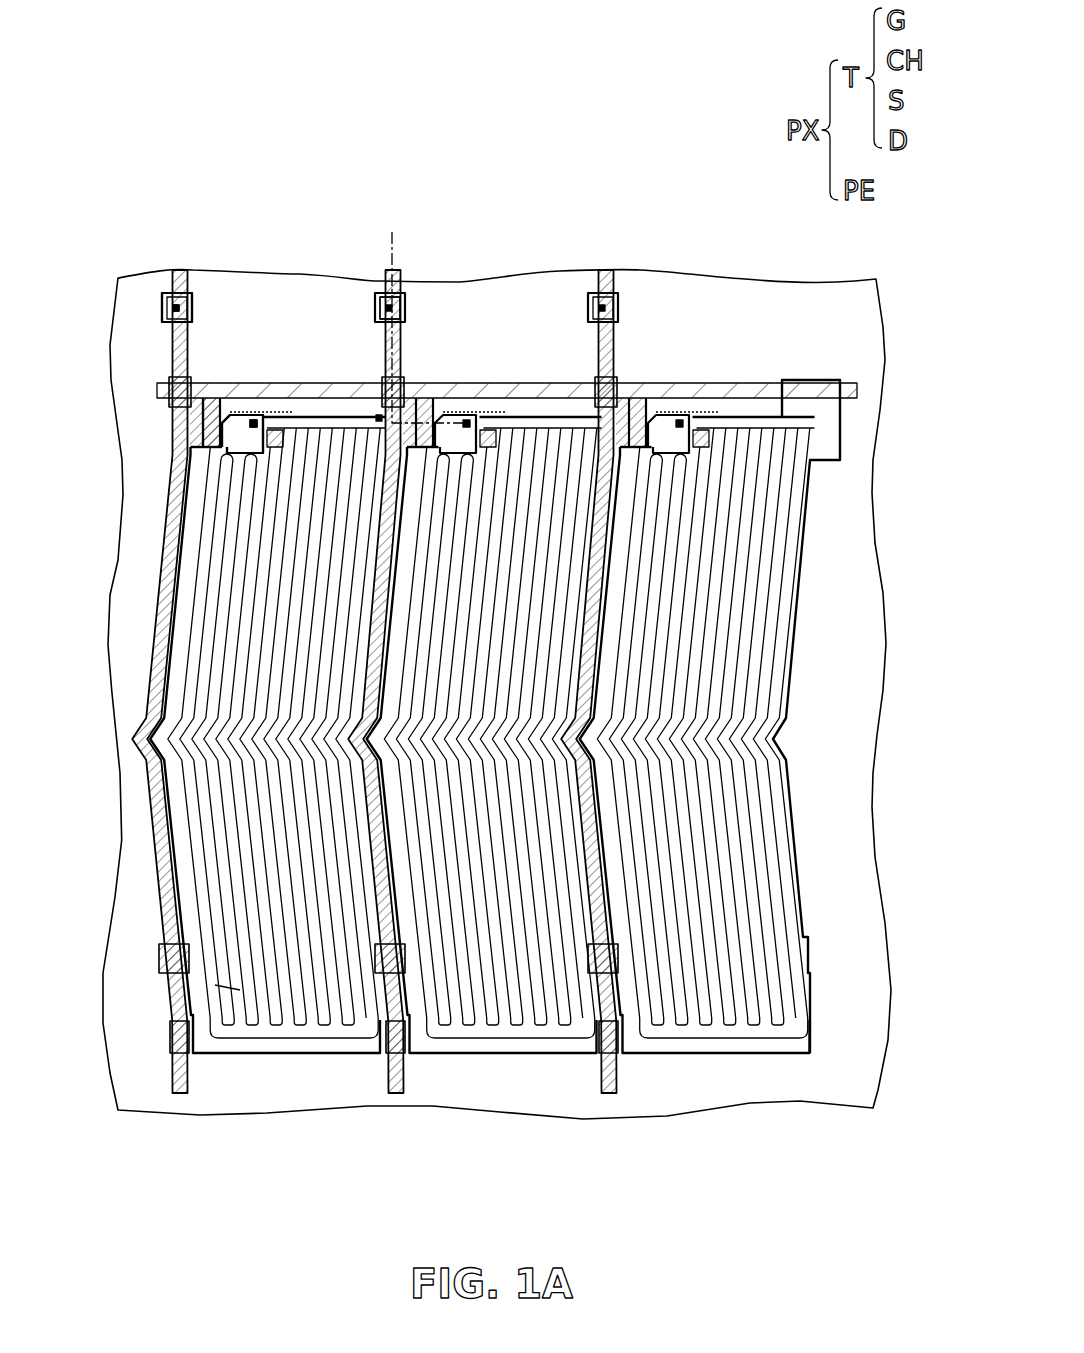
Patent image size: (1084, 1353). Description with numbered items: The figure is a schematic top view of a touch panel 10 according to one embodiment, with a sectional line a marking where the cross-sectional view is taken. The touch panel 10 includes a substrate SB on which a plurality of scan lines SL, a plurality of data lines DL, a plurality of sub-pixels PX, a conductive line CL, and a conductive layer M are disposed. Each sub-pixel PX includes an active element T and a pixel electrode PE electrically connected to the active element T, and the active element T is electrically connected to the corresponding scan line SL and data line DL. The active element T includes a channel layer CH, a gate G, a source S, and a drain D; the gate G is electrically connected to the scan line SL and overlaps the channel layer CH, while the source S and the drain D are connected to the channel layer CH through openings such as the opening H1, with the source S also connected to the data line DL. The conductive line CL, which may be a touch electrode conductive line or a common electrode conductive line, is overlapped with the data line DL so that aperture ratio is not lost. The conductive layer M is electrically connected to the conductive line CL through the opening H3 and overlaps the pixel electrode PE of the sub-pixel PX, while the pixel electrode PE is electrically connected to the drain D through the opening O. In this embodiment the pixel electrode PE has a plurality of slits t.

The touch panel 10 is at (500, 699).
The substrate SB is at (878, 460).
The sub-pixel PX is at (456, 680).
The active element T is at (387, 318).
The scan line SL is at (468, 398).
The data line DL is at (168, 878).
The pixel electrode PE is at (535, 415).
The gate G is at (212, 420).
The channel layer CH is at (195, 423).
The source S is at (163, 307).
The drain D is at (240, 412).
The opening O is at (256, 414).
The opening H1 is at (176, 297).
The opening H3 is at (378, 412).
The conductive line CL is at (378, 305).
The conductive layer M is at (590, 418).
The sectional line a is at (446, 313).
The slit t is at (210, 985).